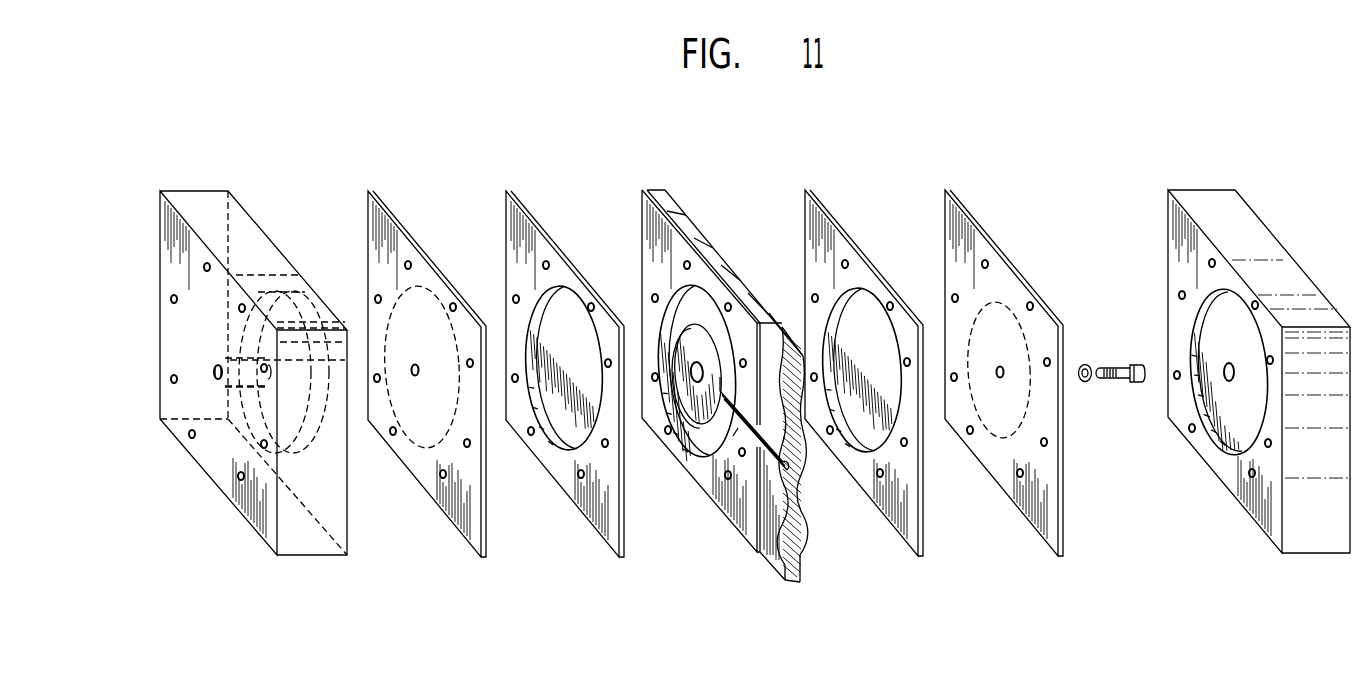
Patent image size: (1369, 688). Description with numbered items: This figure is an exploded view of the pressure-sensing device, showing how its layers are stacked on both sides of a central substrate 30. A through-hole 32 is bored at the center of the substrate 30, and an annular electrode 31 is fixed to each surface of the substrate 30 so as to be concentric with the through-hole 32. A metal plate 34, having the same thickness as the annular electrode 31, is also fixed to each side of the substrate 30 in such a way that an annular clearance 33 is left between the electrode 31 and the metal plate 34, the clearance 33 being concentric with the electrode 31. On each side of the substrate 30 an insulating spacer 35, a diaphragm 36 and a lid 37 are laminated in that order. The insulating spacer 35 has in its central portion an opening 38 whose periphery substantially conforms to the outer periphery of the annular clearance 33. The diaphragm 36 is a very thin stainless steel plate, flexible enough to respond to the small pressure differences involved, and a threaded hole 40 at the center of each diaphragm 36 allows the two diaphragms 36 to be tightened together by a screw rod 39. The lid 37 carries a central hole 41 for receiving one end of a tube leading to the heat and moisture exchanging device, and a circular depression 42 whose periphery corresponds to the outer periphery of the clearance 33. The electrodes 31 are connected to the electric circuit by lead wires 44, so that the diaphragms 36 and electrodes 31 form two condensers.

The substrate 30 is at (704, 390).
The annular electrode 31 is at (690, 407).
The through-hole 32 is at (688, 340).
The annular clearance 33 is at (723, 437).
The metal plate 34 is at (710, 243).
The insulating spacer 35 is at (593, 533).
The diaphragm 36 is at (462, 543).
The lid 37 is at (332, 555).
The opening 38 is at (553, 418).
The screw rod 39 is at (1132, 365).
The threaded hole 40 is at (414, 376).
The hole 41 is at (216, 374).
The circular depression 42 is at (310, 302).
The lead wire 44 is at (797, 505).